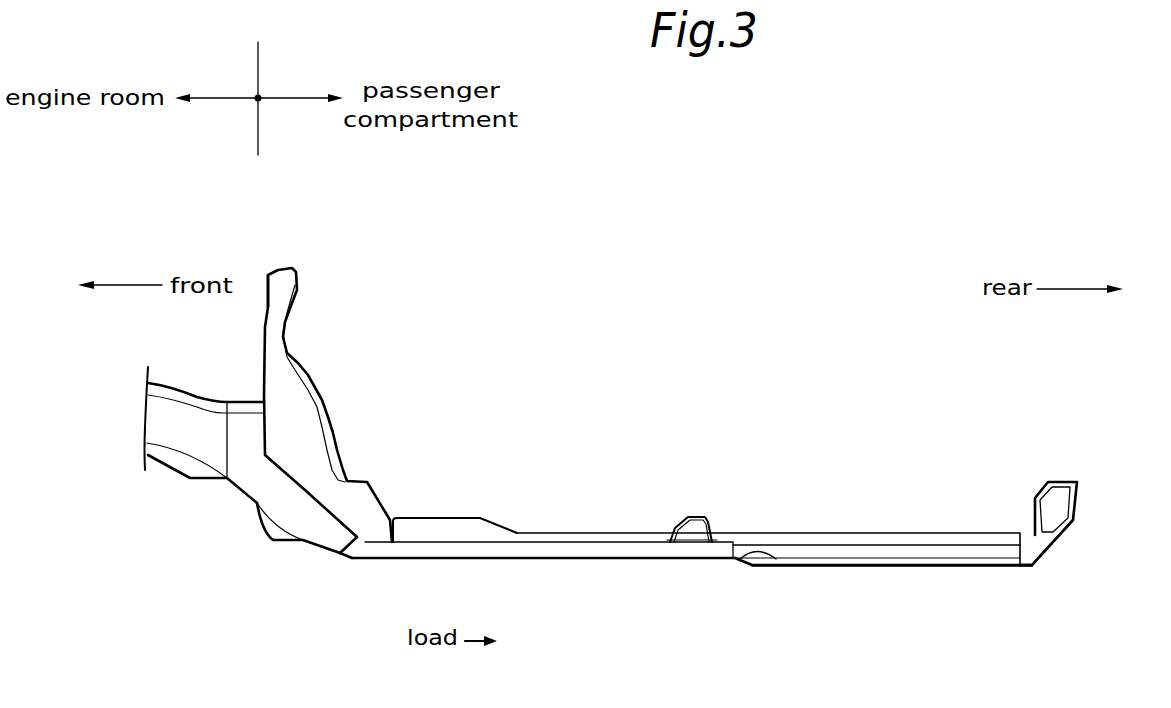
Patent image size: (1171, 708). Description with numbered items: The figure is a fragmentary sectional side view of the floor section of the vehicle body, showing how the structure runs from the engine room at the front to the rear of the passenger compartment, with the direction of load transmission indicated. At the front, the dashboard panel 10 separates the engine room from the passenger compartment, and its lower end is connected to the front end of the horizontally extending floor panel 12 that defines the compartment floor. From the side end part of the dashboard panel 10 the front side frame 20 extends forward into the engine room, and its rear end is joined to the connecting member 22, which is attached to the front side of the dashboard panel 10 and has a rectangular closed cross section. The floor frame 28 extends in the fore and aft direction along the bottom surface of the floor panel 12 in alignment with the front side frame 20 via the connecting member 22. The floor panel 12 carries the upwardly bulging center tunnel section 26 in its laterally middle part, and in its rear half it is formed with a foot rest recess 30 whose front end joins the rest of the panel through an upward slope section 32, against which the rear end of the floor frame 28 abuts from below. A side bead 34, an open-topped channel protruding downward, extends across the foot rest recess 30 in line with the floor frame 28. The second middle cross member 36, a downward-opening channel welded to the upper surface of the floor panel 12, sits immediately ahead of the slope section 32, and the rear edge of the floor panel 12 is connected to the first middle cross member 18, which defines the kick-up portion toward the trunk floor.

The dashboard panel 10 is at (293, 393).
The floor panel 12 is at (803, 535).
The first middle cross member 18 is at (1058, 480).
The front side frame 20 is at (188, 415).
The connecting member 22 is at (258, 480).
The center tunnel section 26 is at (570, 532).
The floor frame 28 is at (547, 553).
The foot rest recess 30 is at (885, 552).
The upward slope section 32 is at (775, 563).
The side bead 34 is at (905, 568).
The second middle cross member 36 is at (702, 515).